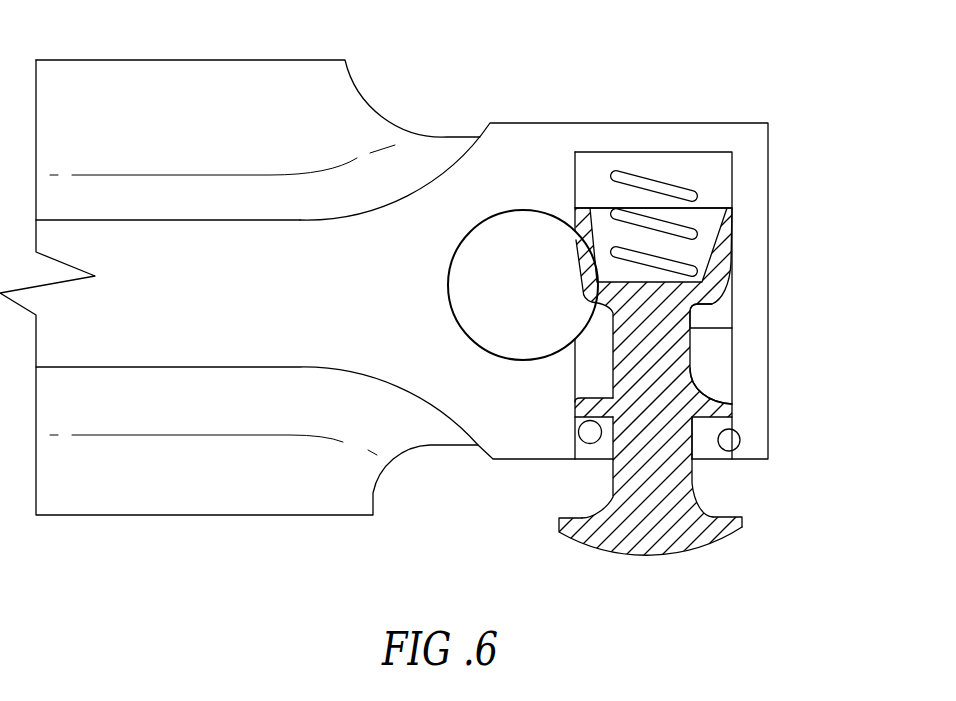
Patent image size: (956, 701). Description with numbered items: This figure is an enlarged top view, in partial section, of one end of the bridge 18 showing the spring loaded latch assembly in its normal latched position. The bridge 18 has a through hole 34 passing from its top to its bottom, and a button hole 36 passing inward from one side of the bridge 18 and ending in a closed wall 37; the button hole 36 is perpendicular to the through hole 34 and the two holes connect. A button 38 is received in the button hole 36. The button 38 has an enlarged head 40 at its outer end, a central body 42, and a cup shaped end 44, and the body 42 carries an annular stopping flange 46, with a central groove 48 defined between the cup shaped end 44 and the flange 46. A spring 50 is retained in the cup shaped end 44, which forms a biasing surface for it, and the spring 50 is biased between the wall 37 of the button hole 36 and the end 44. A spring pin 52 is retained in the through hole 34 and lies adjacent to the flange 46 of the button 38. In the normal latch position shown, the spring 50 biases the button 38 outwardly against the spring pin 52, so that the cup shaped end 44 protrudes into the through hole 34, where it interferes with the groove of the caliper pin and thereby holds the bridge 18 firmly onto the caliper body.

The bridge 18 is at (458, 62).
The through hole 34 is at (514, 210).
The button hole 36 is at (730, 453).
The wall 37 is at (710, 163).
The button 38 is at (670, 553).
The enlarged head 40 is at (743, 523).
The central body 42 is at (672, 368).
The cup shaped end 44 is at (727, 242).
The annular stopping flange 46 is at (727, 407).
The central groove 48 is at (690, 330).
The spring 50 is at (637, 177).
The spring pin 52 is at (588, 436).